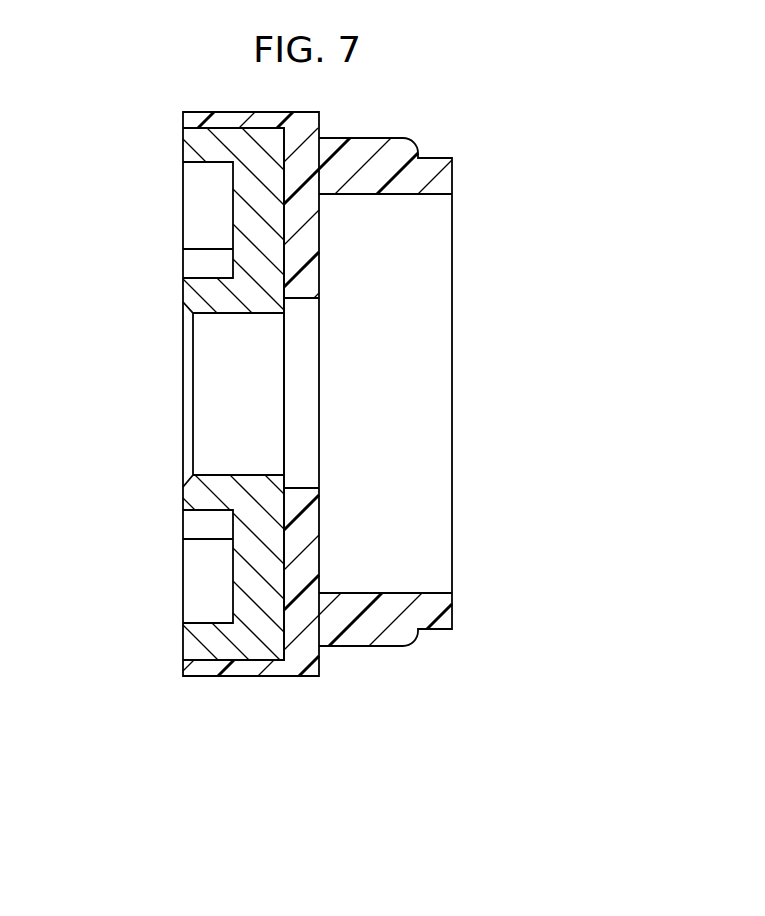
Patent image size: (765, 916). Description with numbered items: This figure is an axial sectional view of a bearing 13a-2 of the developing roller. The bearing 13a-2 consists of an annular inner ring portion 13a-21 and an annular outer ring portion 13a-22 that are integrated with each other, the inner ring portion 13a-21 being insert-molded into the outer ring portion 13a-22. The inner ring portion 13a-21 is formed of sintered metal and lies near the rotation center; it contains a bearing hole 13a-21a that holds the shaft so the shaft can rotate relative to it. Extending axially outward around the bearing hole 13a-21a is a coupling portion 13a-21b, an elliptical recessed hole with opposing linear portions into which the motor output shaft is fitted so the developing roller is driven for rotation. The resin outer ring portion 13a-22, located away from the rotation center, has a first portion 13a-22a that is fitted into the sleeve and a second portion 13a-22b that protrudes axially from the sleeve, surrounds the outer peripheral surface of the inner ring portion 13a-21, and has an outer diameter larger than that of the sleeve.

The bearing 13a-2 is at (432, 105).
The inner ring portion 13a-21 is at (228, 647).
The bearing hole 13a-21a is at (241, 475).
The coupling portion 13a-21b is at (203, 573).
The outer ring portion 13a-22 is at (432, 756).
The first portion 13a-22a is at (390, 646).
The second portion 13a-22b is at (255, 676).